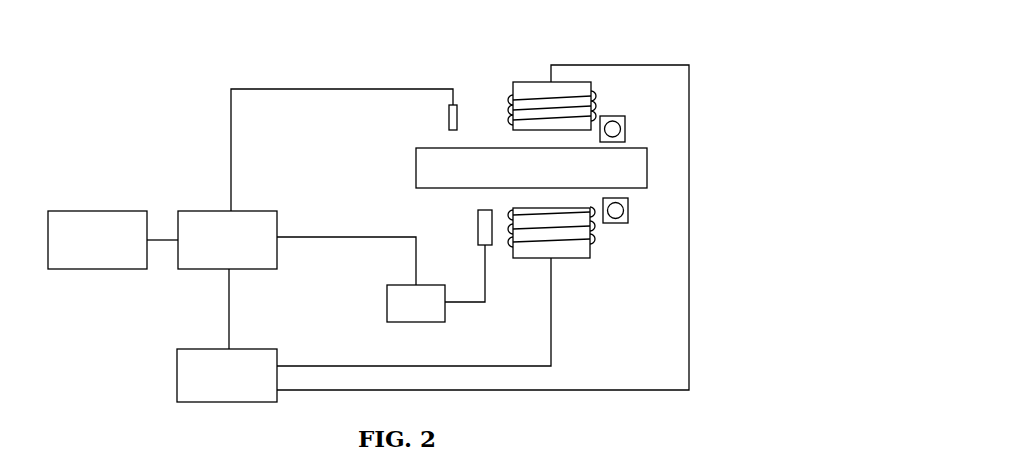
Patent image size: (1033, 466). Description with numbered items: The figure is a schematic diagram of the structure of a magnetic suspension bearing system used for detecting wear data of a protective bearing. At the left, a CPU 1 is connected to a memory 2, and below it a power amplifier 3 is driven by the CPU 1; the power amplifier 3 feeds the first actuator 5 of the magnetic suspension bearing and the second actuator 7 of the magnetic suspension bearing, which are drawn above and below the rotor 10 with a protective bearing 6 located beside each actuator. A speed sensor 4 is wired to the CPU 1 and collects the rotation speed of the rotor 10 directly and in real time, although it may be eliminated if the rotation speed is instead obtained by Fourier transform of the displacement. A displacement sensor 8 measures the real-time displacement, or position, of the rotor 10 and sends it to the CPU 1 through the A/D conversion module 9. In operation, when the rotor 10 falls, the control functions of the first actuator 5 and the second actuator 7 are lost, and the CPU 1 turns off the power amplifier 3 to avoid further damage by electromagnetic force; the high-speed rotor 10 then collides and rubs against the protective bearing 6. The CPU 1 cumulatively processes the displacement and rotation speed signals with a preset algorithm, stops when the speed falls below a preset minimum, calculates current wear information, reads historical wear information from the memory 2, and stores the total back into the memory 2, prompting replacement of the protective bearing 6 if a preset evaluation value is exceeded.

The Central Processing Unit (CPU) 1 is at (213, 197).
The memory 2 is at (103, 198).
The power amplifier 3 is at (203, 338).
The speed sensor 4 is at (462, 93).
The first actuator of magnetic suspension bearing 5 is at (598, 75).
The protective bearing 6 is at (632, 123).
The second actuator of magnetic suspension bearing 7 is at (580, 268).
The displacement sensor 8 is at (493, 250).
The Analog to Digital (A/D) conversion module 9 is at (382, 286).
The rotor 10 is at (655, 168).